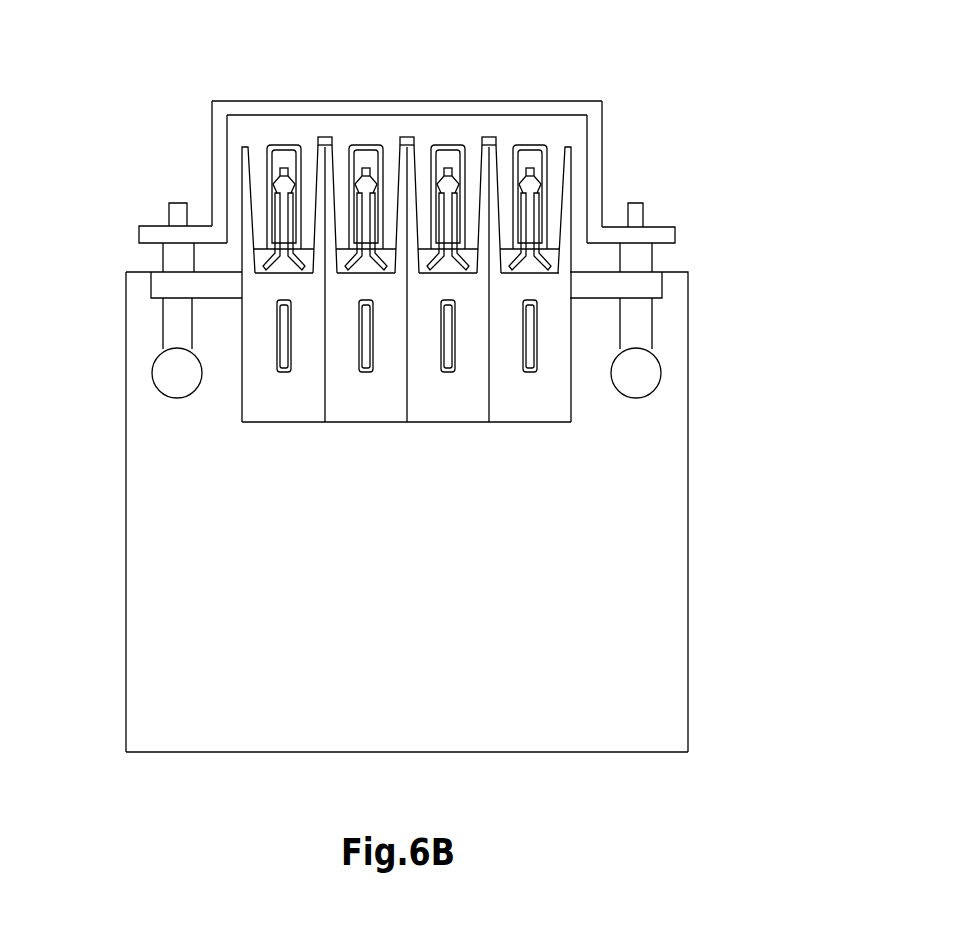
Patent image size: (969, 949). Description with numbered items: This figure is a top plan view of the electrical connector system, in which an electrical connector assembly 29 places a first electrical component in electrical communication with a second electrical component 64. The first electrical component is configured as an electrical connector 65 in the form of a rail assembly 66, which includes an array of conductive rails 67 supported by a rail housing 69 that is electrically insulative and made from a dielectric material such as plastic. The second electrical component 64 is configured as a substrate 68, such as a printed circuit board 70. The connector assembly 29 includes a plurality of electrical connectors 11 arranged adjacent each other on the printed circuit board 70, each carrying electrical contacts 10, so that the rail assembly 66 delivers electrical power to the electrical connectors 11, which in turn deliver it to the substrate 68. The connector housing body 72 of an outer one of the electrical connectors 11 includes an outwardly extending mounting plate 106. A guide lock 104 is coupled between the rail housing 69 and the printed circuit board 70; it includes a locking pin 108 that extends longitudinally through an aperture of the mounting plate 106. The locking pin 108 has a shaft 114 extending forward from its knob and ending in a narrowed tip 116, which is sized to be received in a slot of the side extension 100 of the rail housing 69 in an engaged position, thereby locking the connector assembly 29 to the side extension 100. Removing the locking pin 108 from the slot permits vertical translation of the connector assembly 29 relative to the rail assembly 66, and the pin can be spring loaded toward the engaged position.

The electrical contact 10 is at (284, 167).
The electrical connector 11 is at (292, 422).
The electrical connector assembly 29 is at (240, 409).
The second electrical component 64 is at (124, 719).
The electrical connector 65 is at (490, 99).
The rail assembly 66 is at (410, 101).
The conductive rail 67 is at (278, 143).
The substrate 68 is at (126, 678).
The rail housing 69 is at (603, 128).
The printed circuit board 70 is at (225, 752).
The connector housing body 72 is at (537, 422).
The side extension 100 is at (150, 238).
The guide lock 104 is at (155, 383).
The mounting plate 106 is at (160, 290).
The locking pin 108 is at (161, 327).
The shaft 114 is at (637, 325).
The tip 116 is at (636, 216).